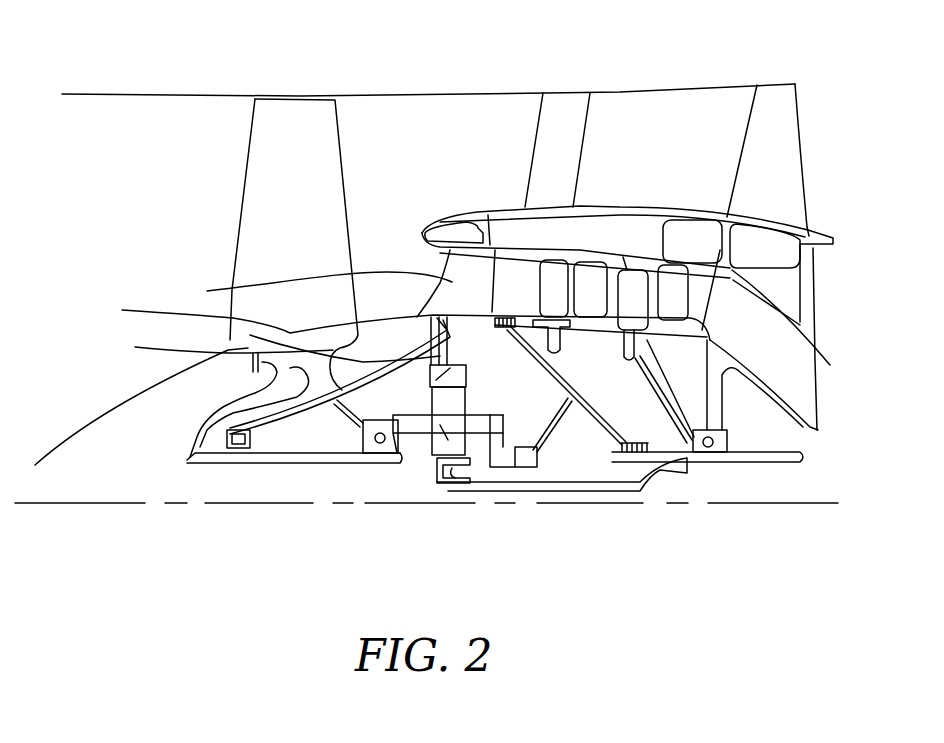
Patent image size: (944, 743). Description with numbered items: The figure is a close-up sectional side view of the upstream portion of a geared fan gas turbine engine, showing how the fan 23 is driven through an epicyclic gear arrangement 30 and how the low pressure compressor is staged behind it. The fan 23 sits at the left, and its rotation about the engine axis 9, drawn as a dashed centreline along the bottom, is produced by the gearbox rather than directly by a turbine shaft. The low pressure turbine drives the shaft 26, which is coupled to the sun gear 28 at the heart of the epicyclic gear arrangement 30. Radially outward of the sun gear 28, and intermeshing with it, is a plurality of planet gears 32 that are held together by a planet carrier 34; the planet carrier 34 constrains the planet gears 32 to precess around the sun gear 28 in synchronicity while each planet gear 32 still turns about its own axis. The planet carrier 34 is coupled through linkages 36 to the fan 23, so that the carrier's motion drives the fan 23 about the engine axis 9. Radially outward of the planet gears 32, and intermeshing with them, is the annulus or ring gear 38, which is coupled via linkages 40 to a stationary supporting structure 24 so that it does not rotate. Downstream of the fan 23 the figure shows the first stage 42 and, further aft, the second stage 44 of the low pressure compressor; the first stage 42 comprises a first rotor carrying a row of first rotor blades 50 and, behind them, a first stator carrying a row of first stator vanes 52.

The engine axis 9 is at (125, 505).
The fan 23 is at (250, 205).
The stationary supporting structure 24 is at (316, 287).
The shaft 26 is at (593, 483).
The sun gear 28 is at (452, 473).
The epicyclic gear arrangement 30 is at (417, 455).
The planet gears 32 is at (433, 453).
The planet carrier 34 is at (498, 447).
The linkages 36 is at (410, 455).
The ring gear 38 is at (279, 387).
The linkages 40 is at (457, 339).
The first stage 42 is at (568, 238).
The second stage 44 is at (657, 243).
The first rotor blades 50 is at (553, 287).
The first stator vanes 52 is at (623, 257).